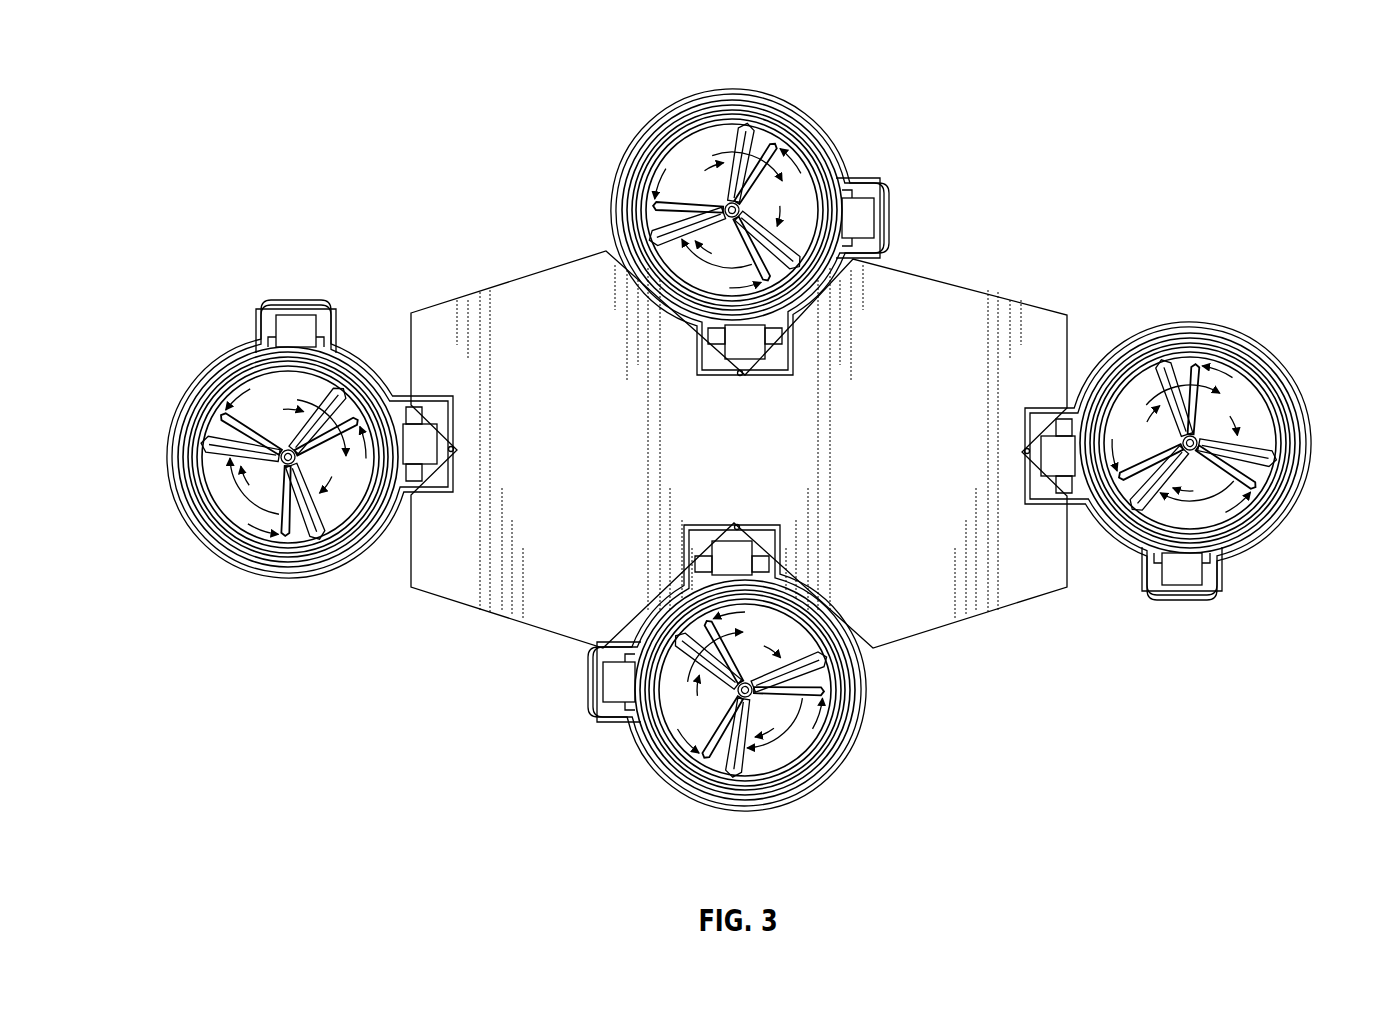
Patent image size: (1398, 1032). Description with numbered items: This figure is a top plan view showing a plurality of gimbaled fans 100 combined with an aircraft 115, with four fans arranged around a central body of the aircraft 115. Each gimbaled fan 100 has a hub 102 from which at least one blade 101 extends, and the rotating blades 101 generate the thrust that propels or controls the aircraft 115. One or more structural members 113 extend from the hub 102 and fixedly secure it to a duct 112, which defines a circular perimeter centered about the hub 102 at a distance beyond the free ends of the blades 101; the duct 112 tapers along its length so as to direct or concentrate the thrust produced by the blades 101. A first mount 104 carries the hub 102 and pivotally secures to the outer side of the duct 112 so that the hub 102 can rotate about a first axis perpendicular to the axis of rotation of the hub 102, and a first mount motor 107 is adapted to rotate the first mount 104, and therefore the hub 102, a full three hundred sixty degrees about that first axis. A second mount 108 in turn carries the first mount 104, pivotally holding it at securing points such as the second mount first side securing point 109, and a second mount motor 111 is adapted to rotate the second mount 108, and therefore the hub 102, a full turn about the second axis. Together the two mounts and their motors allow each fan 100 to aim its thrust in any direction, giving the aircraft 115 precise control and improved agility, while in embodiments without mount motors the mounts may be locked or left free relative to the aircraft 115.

The gimbaled fan 100 is at (723, 462).
The blade 101 is at (698, 130).
The hub 102 is at (818, 140).
The first mount 104 is at (875, 198).
The first mount motor 107 is at (889, 218).
The second mount 108 is at (648, 118).
The second mount first side securing point 109 is at (733, 97).
The second mount motor 111 is at (749, 378).
The duct 112 is at (726, 276).
The structural member 113 is at (806, 130).
The aircraft 115 is at (1012, 290).